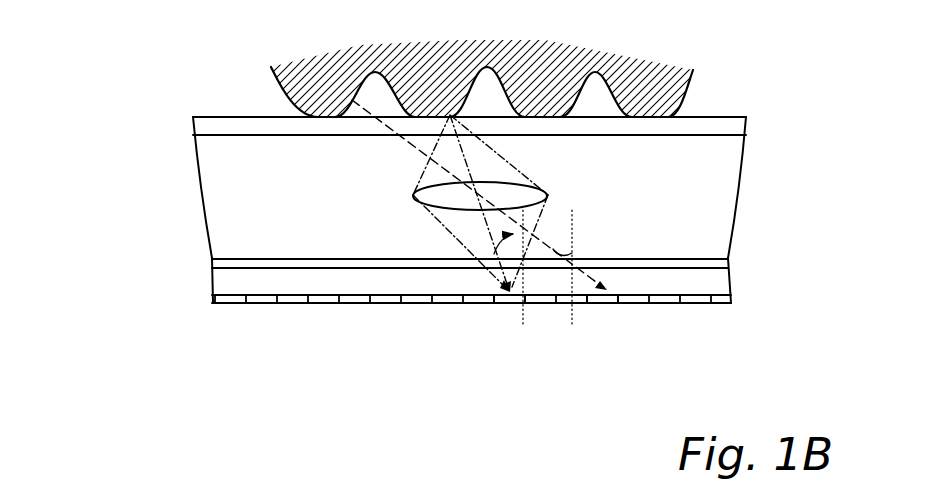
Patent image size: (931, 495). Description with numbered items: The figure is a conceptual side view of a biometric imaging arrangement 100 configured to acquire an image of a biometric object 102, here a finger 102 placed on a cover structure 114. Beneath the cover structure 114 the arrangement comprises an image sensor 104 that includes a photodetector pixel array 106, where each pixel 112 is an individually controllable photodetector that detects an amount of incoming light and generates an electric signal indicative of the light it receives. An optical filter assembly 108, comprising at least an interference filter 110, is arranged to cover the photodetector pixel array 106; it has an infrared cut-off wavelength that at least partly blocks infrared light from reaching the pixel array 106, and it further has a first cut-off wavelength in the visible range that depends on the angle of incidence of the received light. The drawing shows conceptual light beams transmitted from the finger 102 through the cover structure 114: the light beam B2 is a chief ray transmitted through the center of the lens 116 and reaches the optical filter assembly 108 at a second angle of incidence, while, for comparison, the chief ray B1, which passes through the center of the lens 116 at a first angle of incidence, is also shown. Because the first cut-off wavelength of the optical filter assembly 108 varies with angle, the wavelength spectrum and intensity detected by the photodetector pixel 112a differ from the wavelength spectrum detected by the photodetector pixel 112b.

The biometric imaging arrangement 100 is at (161, 283).
The biometric object 102 is at (452, 91).
The image sensor 104 is at (209, 298).
The photodetector pixel array 106 is at (205, 283).
The optical filter assembly 108 is at (391, 249).
The interference filter 110 is at (234, 262).
The pixel 112 is at (232, 304).
The photodetector pixel 112a is at (612, 304).
The photodetector pixel 112b is at (515, 304).
The cover structure 114 is at (193, 120).
The lens 116 is at (414, 192).
The light beam B1 is at (543, 252).
The light beam B2 is at (487, 222).